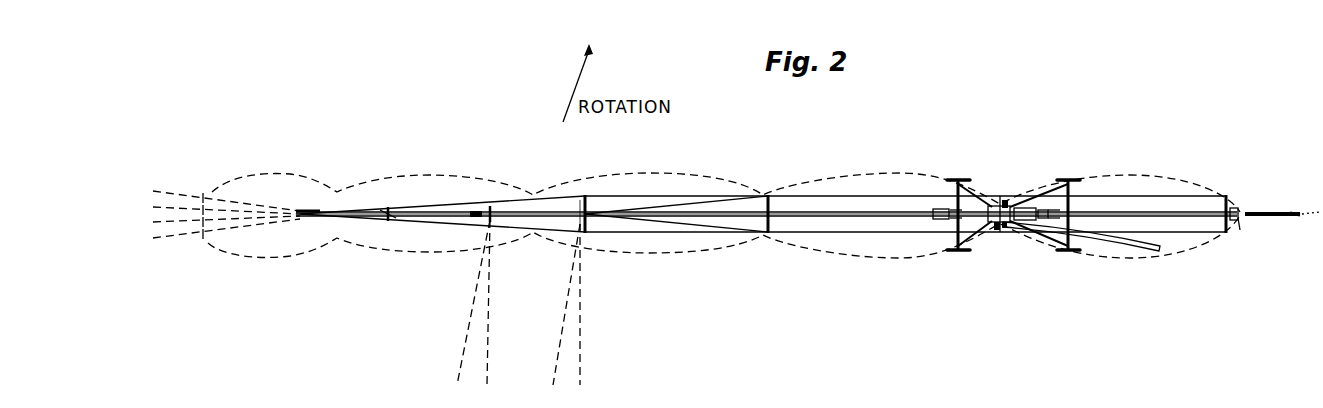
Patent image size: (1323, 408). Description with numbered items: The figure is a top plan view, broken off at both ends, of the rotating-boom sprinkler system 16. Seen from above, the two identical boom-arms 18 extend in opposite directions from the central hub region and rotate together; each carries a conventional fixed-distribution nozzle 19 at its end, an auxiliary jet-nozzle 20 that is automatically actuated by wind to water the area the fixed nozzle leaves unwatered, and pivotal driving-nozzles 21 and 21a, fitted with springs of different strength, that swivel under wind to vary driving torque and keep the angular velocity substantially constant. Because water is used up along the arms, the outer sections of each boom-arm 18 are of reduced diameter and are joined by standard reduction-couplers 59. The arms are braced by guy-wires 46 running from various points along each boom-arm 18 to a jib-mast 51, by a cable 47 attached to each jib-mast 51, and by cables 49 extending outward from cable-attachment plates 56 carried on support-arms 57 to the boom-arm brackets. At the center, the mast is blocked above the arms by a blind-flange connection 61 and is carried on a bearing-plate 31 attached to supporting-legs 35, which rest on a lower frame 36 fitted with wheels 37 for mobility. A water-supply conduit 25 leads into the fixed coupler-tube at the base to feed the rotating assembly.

The rotating-boom sprinkler system 16 is at (1030, 163).
The boom-arm 18 is at (459, 218).
The fixed-distribution nozzle 19 is at (300, 209).
The auxiliary jet-nozzle 20 is at (386, 215).
The pivotal driving-nozzle 21 is at (488, 208).
The driving-nozzle 21a is at (576, 226).
The water-supply conduit 25 is at (1156, 248).
The bearing-plate 31 is at (994, 204).
The supporting-leg 35 is at (1068, 251).
The lower frame 36 is at (948, 247).
The wheel 37 is at (952, 253).
The guy-wire 46 is at (826, 214).
The cable 47 is at (942, 212).
The cable 49 is at (683, 198).
The jib-mast 51 is at (944, 222).
The cable-attachment plate 56 is at (1006, 202).
The support-arm 57 is at (996, 228).
The reduction-coupler 59 is at (756, 218).
The blind-flange connection 61 is at (1006, 230).